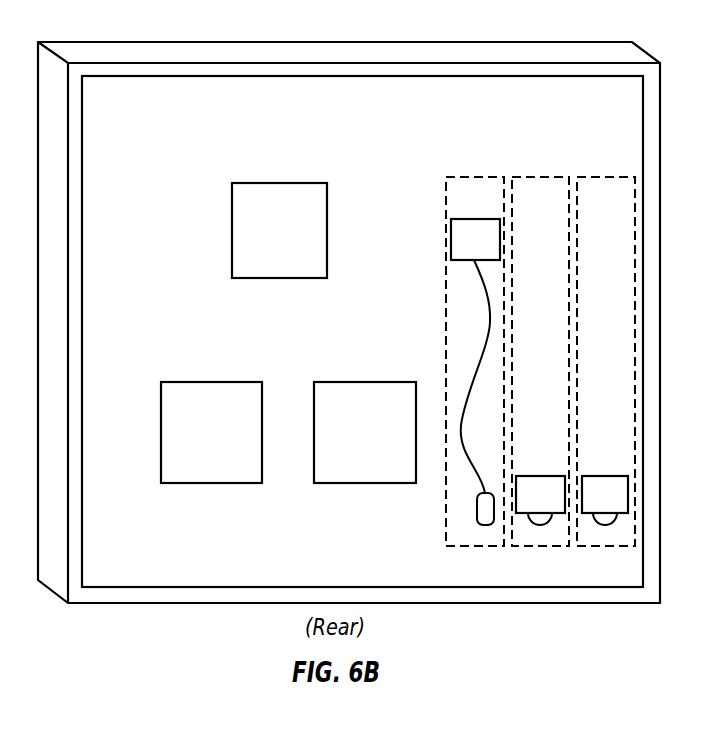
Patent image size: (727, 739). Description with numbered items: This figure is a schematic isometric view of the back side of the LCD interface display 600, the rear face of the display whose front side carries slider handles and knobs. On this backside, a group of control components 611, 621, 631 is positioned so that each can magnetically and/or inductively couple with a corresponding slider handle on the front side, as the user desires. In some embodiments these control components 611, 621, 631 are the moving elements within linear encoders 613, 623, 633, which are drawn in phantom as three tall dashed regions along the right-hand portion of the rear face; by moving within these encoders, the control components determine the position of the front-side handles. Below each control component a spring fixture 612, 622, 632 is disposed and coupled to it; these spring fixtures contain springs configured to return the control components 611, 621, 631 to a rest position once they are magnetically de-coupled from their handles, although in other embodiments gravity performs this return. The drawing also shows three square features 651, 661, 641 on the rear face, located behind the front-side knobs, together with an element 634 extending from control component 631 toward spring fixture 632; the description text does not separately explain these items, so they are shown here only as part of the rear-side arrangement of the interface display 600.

The LCD interface display 600 is at (517, 53).
The component module 651 is at (299, 244).
The component module 661 is at (231, 444).
The component module 641 is at (384, 444).
The linear encoder 633 is at (478, 177).
The linear encoder 623 is at (543, 177).
The linear encoder 613 is at (597, 177).
The control component 631 is at (493, 252).
The cable 634 is at (488, 342).
The spring fixture 632 is at (484, 525).
The control component 621 is at (558, 507).
The spring fixture 622 is at (540, 526).
The control component 611 is at (623, 507).
The spring fixture 612 is at (605, 526).